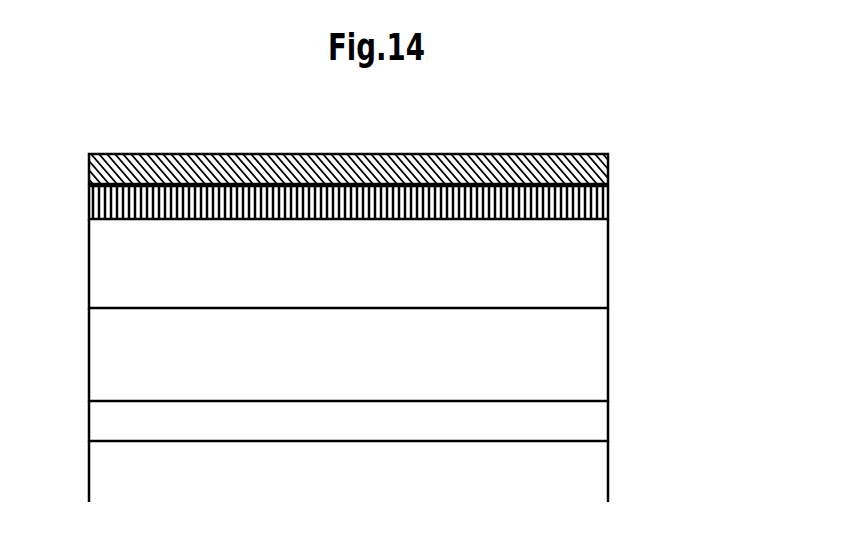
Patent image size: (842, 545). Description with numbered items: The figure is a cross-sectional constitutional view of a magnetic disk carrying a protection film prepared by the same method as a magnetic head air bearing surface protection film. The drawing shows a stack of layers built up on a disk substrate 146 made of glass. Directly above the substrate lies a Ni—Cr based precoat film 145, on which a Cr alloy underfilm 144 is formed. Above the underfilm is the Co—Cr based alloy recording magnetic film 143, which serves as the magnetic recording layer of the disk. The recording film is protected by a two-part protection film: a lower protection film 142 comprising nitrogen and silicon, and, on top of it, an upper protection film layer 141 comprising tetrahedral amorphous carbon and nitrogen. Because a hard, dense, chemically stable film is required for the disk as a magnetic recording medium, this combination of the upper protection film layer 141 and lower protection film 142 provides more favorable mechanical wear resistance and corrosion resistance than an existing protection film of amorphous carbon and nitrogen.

The upper protection film layer 141 is at (600, 172).
The lower protection film 142 is at (600, 201).
The Co—Cr based alloy recording magnetic film 143 is at (600, 262).
The Cr alloy underfilm 144 is at (600, 352).
The Ni—Cr based precoat film 145 is at (600, 423).
The disk substrate 146 is at (600, 478).